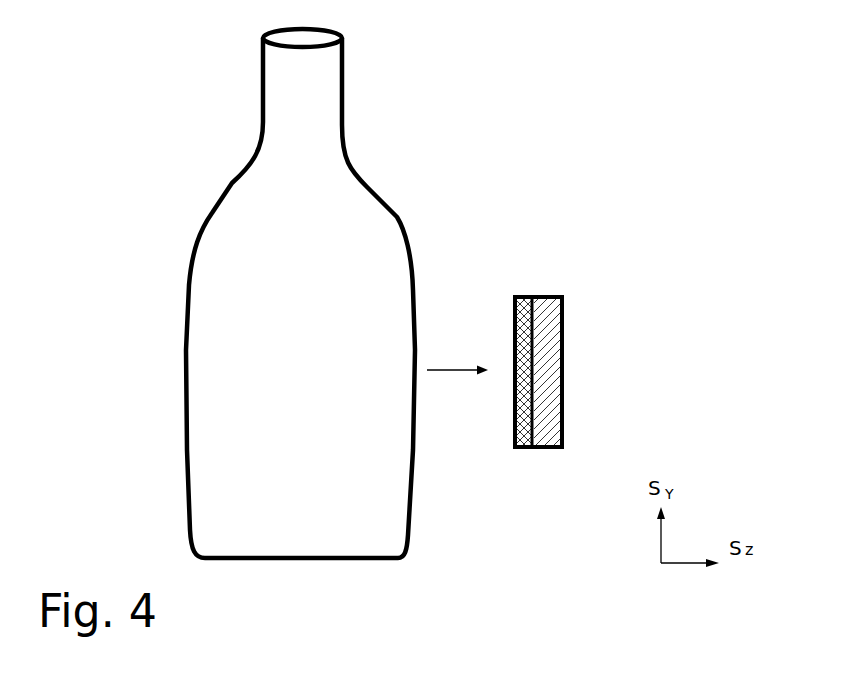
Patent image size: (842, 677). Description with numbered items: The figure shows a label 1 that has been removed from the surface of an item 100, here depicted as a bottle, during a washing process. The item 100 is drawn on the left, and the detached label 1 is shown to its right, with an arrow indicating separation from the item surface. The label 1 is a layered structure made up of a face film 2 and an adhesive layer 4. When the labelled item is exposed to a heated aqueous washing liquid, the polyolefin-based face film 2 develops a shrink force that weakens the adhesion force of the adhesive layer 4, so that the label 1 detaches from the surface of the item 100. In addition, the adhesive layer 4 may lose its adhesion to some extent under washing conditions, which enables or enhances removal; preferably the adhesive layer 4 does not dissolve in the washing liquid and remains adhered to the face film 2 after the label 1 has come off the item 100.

The item 100 is at (196, 245).
The label 1 is at (592, 378).
The face film 2 is at (548, 293).
The adhesive layer 4 is at (524, 449).